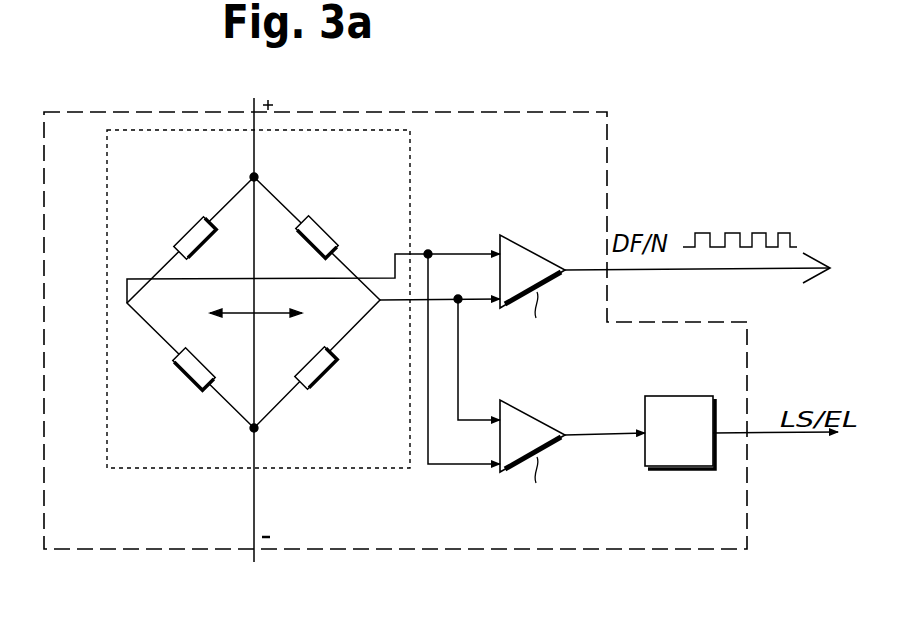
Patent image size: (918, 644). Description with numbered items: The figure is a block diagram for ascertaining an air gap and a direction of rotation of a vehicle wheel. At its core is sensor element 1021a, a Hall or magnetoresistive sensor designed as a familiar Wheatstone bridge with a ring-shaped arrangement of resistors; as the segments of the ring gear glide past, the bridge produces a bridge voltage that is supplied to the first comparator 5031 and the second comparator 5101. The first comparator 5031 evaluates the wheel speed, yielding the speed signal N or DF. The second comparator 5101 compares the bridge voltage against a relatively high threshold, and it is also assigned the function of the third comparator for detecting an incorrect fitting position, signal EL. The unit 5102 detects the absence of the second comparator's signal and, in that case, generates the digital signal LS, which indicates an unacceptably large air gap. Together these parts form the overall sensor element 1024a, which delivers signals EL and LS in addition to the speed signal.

The sensor element 1021a is at (412, 147).
The overall sensor element 1024a is at (597, 546).
The comparator K1 5031 is at (551, 258).
The comparator K2 5101 is at (551, 418).
The unit 5102 is at (679, 400).